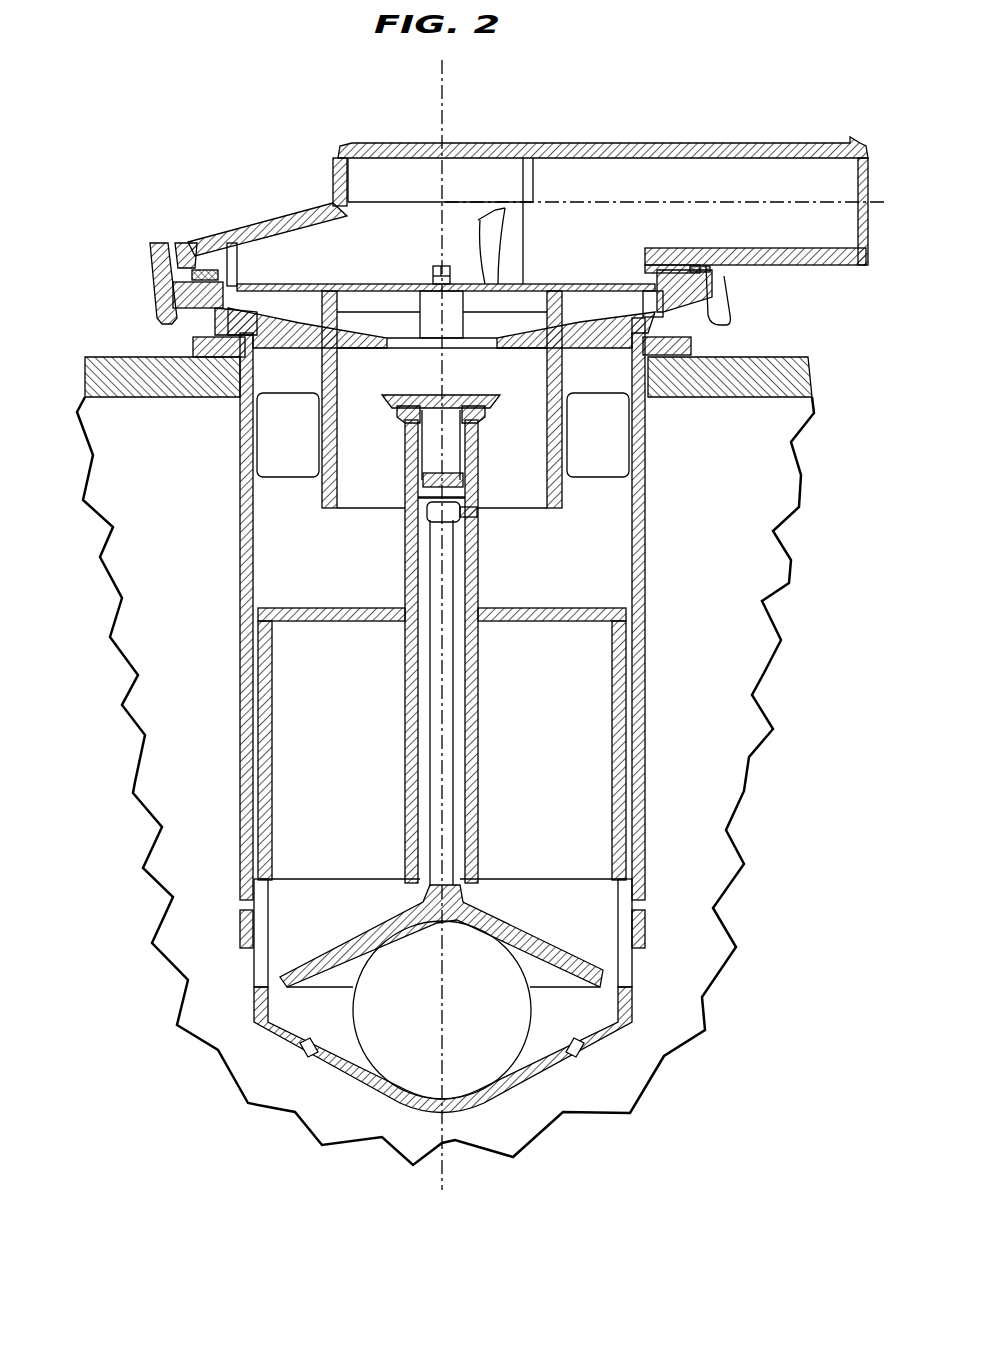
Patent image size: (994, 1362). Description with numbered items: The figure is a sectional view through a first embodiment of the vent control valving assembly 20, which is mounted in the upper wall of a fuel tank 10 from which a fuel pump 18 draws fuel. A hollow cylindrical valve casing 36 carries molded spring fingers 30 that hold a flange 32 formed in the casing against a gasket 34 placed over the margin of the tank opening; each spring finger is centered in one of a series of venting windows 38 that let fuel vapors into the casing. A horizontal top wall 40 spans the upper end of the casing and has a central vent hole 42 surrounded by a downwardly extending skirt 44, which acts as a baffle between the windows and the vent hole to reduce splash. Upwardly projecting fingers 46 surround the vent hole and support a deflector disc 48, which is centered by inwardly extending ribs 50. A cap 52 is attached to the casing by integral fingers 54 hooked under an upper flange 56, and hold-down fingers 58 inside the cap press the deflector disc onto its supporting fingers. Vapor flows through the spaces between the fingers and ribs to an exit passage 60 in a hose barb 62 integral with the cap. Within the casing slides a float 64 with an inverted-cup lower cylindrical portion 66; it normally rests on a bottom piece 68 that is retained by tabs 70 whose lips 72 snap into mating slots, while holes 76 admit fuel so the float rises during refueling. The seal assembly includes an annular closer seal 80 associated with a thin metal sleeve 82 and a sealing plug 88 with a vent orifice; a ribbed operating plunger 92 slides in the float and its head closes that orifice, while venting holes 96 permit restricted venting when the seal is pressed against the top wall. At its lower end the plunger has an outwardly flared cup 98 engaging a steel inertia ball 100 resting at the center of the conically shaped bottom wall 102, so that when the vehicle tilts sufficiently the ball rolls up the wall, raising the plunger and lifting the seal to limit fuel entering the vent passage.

The fuel tank 10 is at (188, 353).
The fuel pump 18 is at (403, 571).
The vent control valving assembly 20 is at (125, 493).
The spring fingers 30 is at (646, 440).
The flange 32 is at (190, 341).
The gasket 34 is at (232, 320).
The valve casing 36 is at (237, 616).
The venting windows 38 is at (582, 449).
The top wall 40 is at (325, 204).
The vent hole 42 is at (330, 200).
The skirt 44 is at (320, 495).
The fingers 46 is at (285, 300).
The deflector disc 48 is at (327, 290).
The ribs 50 is at (237, 230).
The cap 52 is at (428, 138).
The integral fingers 54 is at (175, 270).
The upper flange 56 is at (150, 247).
The hold-down fingers 58 is at (318, 243).
The exit passage 60 is at (732, 194).
The hose barb 62 is at (850, 138).
The float 64 is at (292, 596).
The lower cylindrical portion 66 is at (262, 748).
The bottom piece 68 is at (636, 1000).
The tabs 70 is at (633, 928).
The lip 72 is at (242, 903).
The holes 76 is at (305, 1052).
The closer seal 80 is at (410, 397).
The sleeve 82 is at (438, 390).
The sealing plug 88 is at (480, 459).
The operating plunger 92 is at (455, 683).
The venting holes 96 is at (472, 512).
The cup 98 is at (333, 936).
The inertia ball 100 is at (378, 1013).
The bottom wall 102 is at (523, 1083).